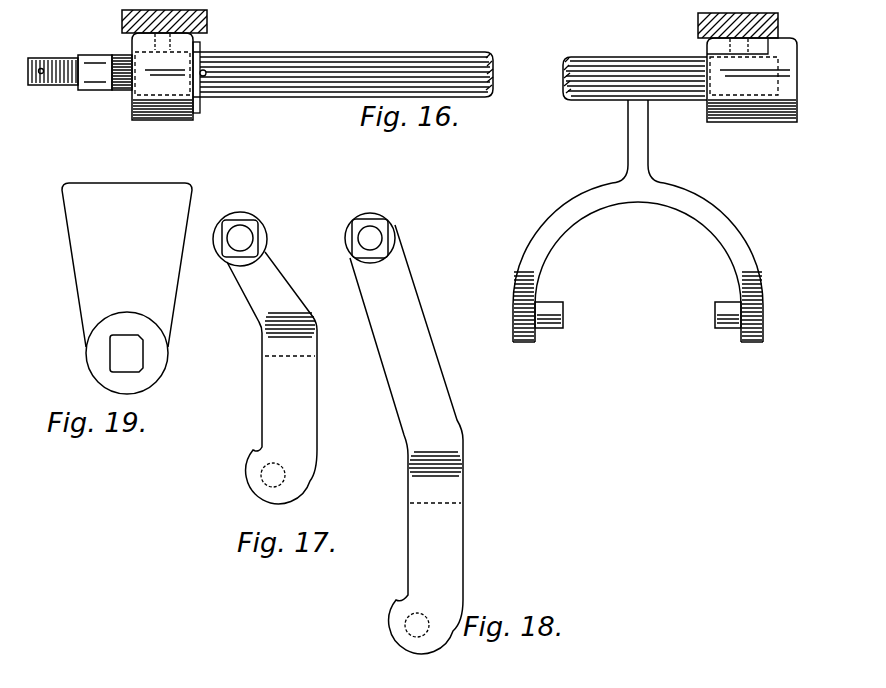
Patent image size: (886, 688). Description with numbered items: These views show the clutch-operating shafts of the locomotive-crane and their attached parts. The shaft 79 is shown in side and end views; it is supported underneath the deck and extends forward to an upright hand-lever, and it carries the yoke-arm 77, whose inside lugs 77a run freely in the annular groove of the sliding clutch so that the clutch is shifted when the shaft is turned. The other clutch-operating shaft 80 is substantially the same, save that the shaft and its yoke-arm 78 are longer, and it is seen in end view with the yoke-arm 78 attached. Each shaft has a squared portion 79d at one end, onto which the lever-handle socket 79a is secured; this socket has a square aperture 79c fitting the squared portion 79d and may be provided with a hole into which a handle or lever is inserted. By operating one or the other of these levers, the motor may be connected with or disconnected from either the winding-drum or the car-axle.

In FIG. 16, the yoke-arm 77 is at (641, 192).
In FIG. 16, the inside lugs 77a is at (716, 310).
In FIG. 17, the inside lugs 77a is at (245, 482).
In FIG. 18, the inside lugs 77a is at (392, 624).
In FIG. 16, the yoke-arm 78 is at (649, 145).
In FIG. 18, the yoke-arm 78 is at (453, 410).
In FIG. 16, the clutch-operating shaft 79 is at (338, 57).
In FIG. 17, the clutch-operating shaft 79 is at (258, 229).
In FIG. 19, the lever-handle socket 79a is at (178, 230).
In FIG. 19, the square aperture 79c is at (133, 365).
In FIG. 16, the squared portion 79d is at (101, 92).
In FIG. 17, the squared portion 79d is at (230, 253).
In FIG. 18, the squared portion 79d is at (362, 252).
In FIG. 18, the clutch-operating shaft 80 is at (383, 229).